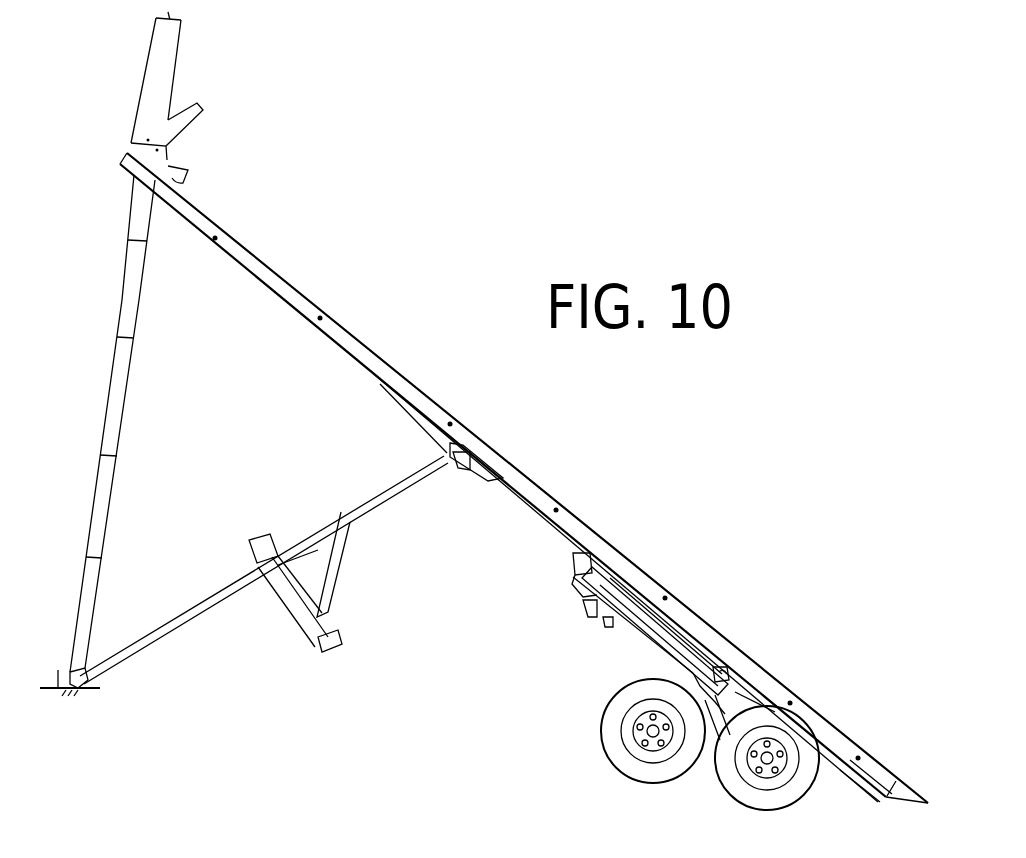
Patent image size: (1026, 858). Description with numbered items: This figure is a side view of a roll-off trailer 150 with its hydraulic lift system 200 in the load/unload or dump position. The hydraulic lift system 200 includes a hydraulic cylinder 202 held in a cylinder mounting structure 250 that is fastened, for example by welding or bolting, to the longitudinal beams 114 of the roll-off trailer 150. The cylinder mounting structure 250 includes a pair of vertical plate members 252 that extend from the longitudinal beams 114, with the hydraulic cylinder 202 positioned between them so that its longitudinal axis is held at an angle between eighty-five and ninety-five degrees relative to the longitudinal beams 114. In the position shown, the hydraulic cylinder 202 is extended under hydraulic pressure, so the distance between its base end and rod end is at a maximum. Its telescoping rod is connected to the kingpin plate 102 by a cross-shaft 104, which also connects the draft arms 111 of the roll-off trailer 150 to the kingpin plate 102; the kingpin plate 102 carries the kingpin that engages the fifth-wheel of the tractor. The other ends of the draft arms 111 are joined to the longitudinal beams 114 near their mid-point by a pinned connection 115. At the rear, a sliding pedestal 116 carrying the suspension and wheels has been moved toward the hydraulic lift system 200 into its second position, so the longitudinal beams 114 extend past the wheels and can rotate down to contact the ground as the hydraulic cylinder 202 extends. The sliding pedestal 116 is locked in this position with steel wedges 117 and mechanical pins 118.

The kingpin plate 102 is at (58, 687).
The cross-shaft 104 is at (80, 681).
The draft arms 111 is at (143, 645).
The longitudinal beams 114 is at (267, 272).
The pinned connection 115 is at (442, 460).
The sliding pedestal 116 is at (667, 647).
The steel wedges 117 is at (583, 560).
The mechanical pins 118 is at (727, 677).
The roll-off trailer 150 is at (622, 525).
The hydraulic lift system 200 is at (204, 78).
The hydraulic cylinder 202 is at (157, 50).
The cylinder mounting structure 250 is at (160, 147).
The vertical plate members 252 is at (183, 120).